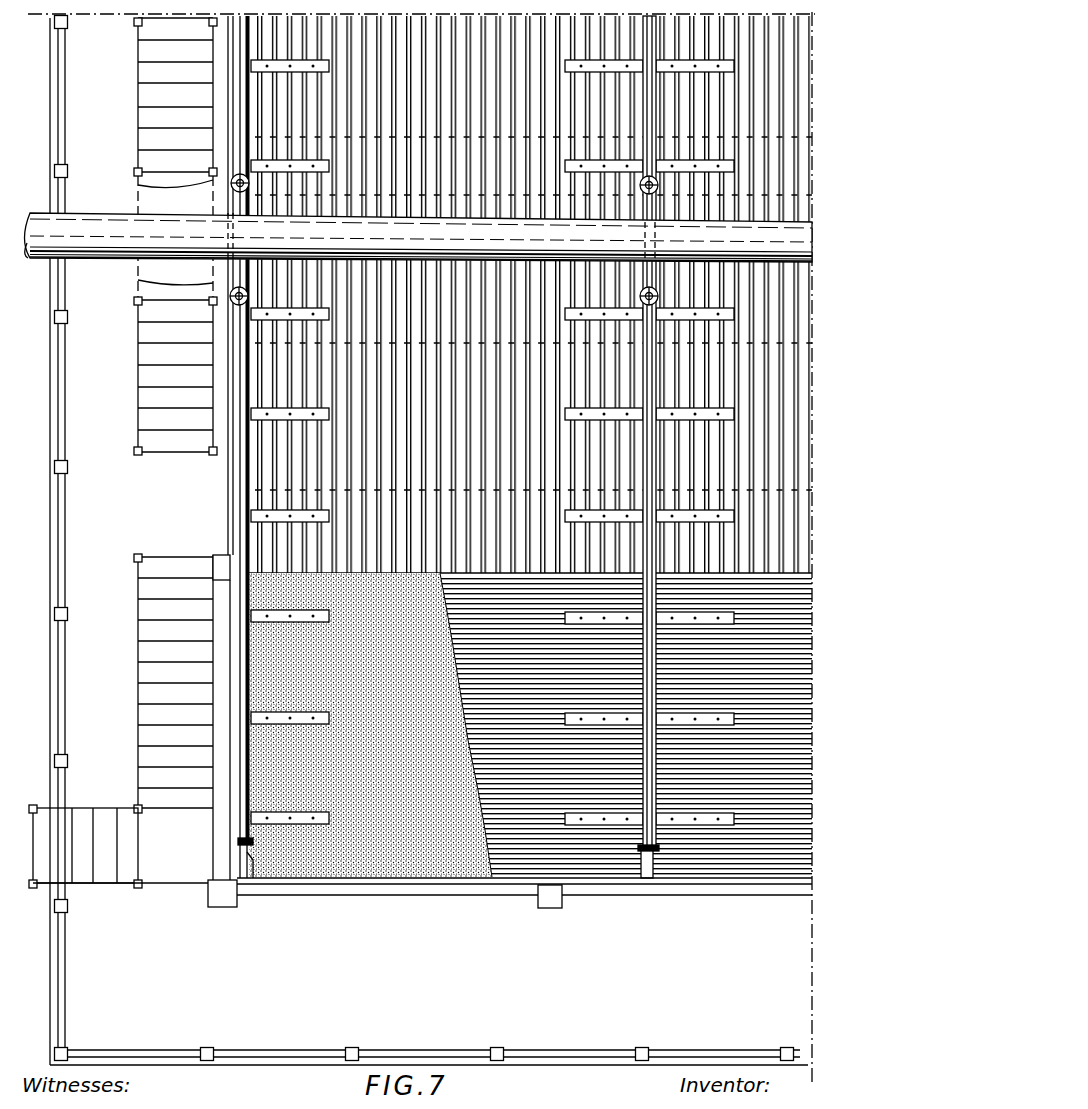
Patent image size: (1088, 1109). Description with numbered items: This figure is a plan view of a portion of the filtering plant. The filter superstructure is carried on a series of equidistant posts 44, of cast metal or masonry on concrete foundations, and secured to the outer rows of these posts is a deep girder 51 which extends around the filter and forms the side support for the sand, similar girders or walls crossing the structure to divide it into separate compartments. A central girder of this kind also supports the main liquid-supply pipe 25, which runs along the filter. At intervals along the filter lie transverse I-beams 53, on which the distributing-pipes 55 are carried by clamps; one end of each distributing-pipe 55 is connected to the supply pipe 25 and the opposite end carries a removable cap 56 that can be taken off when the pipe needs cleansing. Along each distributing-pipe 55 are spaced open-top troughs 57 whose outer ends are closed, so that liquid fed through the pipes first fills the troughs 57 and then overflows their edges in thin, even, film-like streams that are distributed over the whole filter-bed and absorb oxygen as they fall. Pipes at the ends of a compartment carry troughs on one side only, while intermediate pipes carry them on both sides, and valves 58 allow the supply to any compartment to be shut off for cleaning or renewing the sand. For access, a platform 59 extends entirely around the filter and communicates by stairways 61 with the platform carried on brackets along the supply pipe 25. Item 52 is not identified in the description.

The liquid-supply pipe 25 is at (419, 237).
The posts 44 is at (385, 894).
The deep girder 51 is at (237, 861).
The wall beam 52 is at (282, 470).
The transverse I-beams 53 is at (647, 870).
The distributing-pipes 55 is at (450, 237).
The removable cap 56 is at (238, 842).
The open-top troughs 57 is at (329, 315).
The valves 58 is at (231, 189).
The platform 59 is at (429, 541).
The stairways 61 is at (129, 453).